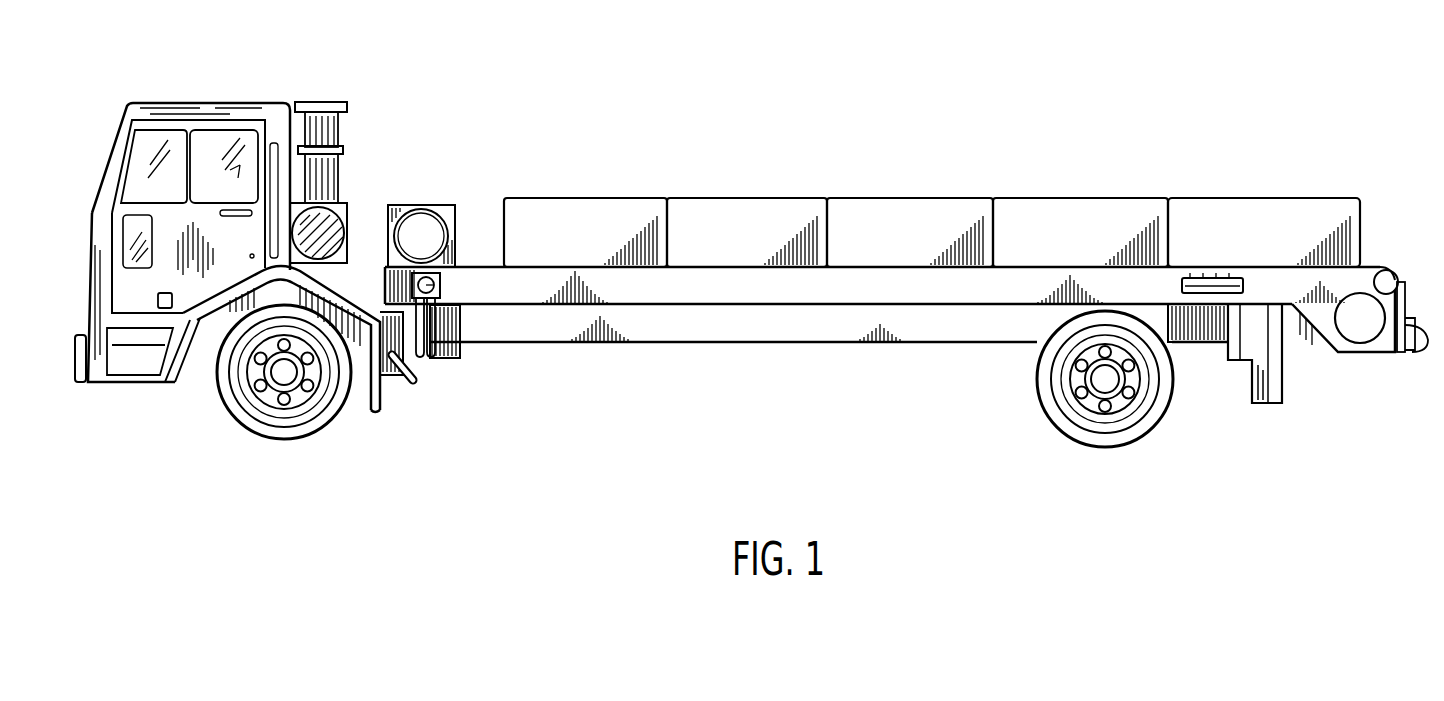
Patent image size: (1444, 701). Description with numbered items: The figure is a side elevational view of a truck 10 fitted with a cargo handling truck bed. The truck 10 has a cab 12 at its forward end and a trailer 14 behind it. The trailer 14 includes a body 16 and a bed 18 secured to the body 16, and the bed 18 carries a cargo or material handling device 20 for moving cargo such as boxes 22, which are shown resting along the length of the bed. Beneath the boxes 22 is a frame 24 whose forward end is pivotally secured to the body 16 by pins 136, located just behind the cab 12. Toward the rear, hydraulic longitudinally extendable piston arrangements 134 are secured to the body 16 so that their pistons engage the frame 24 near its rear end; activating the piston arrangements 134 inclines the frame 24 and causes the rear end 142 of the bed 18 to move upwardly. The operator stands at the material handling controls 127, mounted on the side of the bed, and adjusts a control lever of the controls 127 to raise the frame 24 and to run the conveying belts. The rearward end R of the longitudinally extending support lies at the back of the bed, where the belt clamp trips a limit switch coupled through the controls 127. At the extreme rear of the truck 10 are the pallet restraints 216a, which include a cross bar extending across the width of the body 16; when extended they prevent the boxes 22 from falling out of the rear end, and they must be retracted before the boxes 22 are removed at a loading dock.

The truck 10 is at (555, 138).
The cab 12 is at (185, 103).
The trailer 14 is at (1367, 265).
The body 16 is at (692, 323).
The bed 18 is at (1175, 310).
The material handling device 20 is at (1240, 227).
The boxes 22 is at (943, 198).
The frame 24 is at (862, 288).
The controls 127 is at (1192, 277).
The hydraulic longitudinally extendable piston arrangements 134 is at (1292, 358).
The pins 136 is at (440, 285).
The rear end 142 is at (1404, 355).
The pallet restraints 216a is at (1412, 312).
The rearward end R is at (1388, 270).